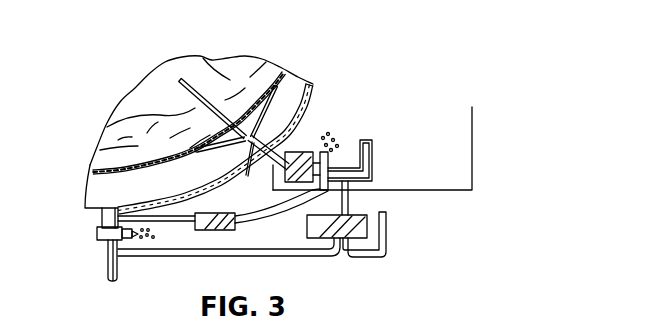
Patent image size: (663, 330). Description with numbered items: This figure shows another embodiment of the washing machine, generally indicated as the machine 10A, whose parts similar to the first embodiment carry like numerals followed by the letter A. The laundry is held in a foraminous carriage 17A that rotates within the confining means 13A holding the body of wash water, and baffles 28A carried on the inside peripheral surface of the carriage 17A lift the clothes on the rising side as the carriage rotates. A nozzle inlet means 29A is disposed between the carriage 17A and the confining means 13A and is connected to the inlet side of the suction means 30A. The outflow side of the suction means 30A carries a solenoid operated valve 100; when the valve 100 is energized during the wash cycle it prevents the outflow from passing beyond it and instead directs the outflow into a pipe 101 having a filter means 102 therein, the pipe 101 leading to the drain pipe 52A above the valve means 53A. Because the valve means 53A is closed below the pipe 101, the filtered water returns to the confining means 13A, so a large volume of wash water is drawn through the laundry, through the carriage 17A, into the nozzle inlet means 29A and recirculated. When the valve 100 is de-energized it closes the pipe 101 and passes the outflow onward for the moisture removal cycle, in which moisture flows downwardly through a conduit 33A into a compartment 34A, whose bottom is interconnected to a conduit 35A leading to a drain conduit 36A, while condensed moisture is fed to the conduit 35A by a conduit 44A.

The machine 10A is at (350, 59).
The baffles 28A is at (155, 70).
The nozzle inlet means 29A is at (277, 80).
The confining means 13A is at (313, 96).
The foraminous carriage 17A is at (108, 172).
The suction means 30A is at (291, 152).
The solenoid operated valve 100 is at (340, 148).
The conduit 33A is at (350, 204).
The compartment 34A is at (353, 238).
The conduit 44A is at (386, 232).
The conduit 35A is at (227, 257).
The drain conduit 36A is at (118, 268).
The valve means 53A is at (97, 233).
The drain pipe 52A is at (116, 210).
The filter means 102 is at (215, 212).
The pipe 101 is at (263, 217).